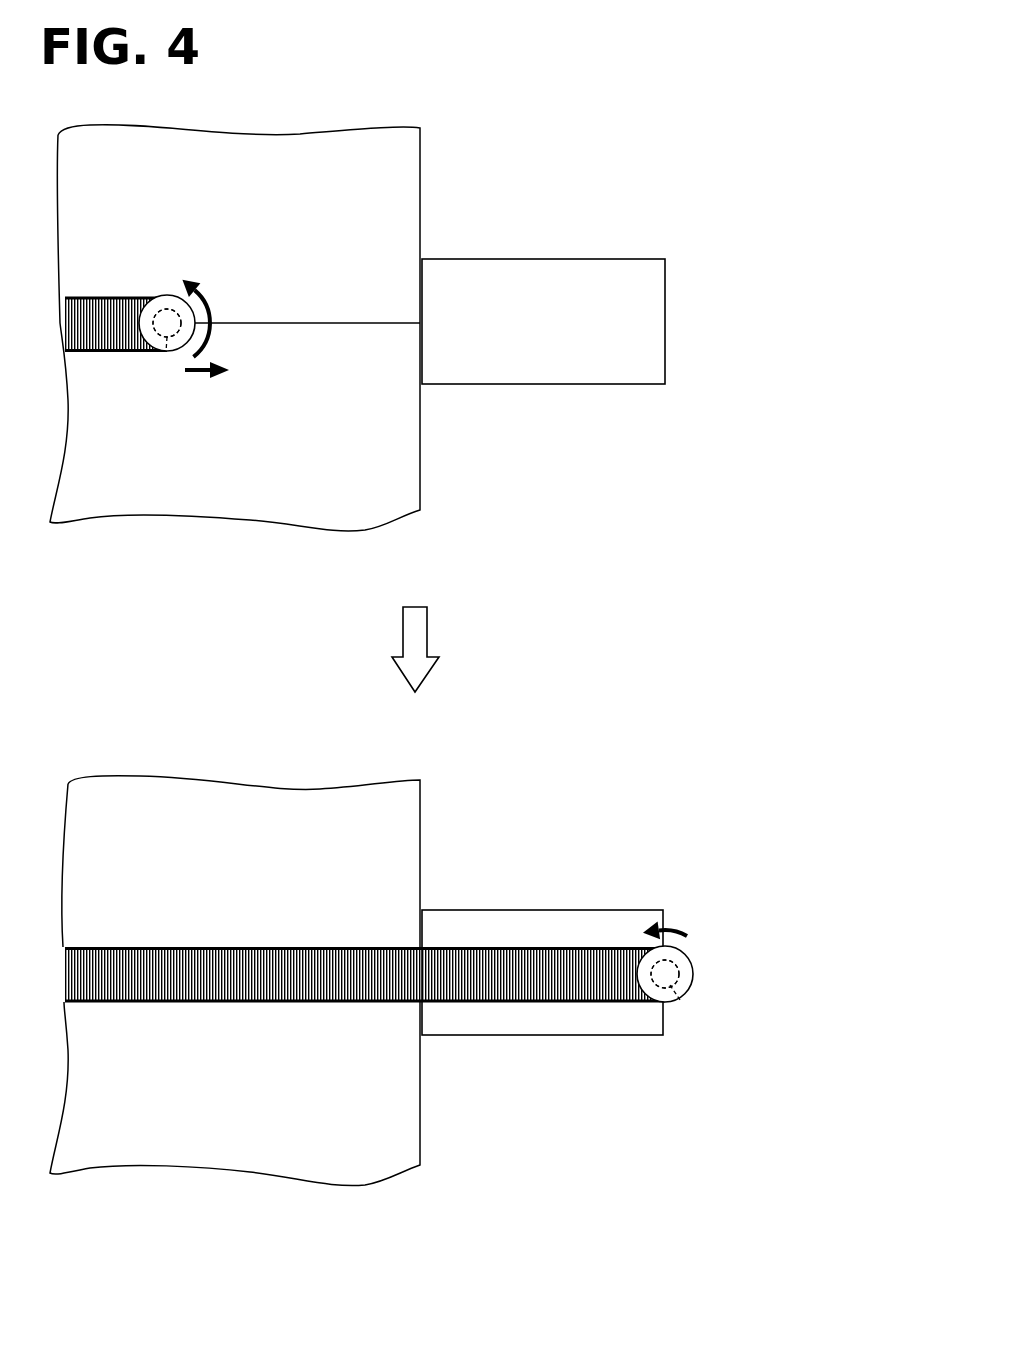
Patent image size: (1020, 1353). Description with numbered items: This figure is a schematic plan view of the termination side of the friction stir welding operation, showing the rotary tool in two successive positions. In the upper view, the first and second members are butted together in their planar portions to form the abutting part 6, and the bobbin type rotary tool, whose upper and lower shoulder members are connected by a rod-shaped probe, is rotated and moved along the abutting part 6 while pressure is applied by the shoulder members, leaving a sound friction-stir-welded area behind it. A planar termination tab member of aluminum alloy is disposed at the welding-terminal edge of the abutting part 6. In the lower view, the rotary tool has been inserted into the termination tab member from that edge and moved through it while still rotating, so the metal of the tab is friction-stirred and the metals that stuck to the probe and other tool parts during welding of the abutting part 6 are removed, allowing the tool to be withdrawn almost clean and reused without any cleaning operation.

The abutting part 6 is at (324, 329).